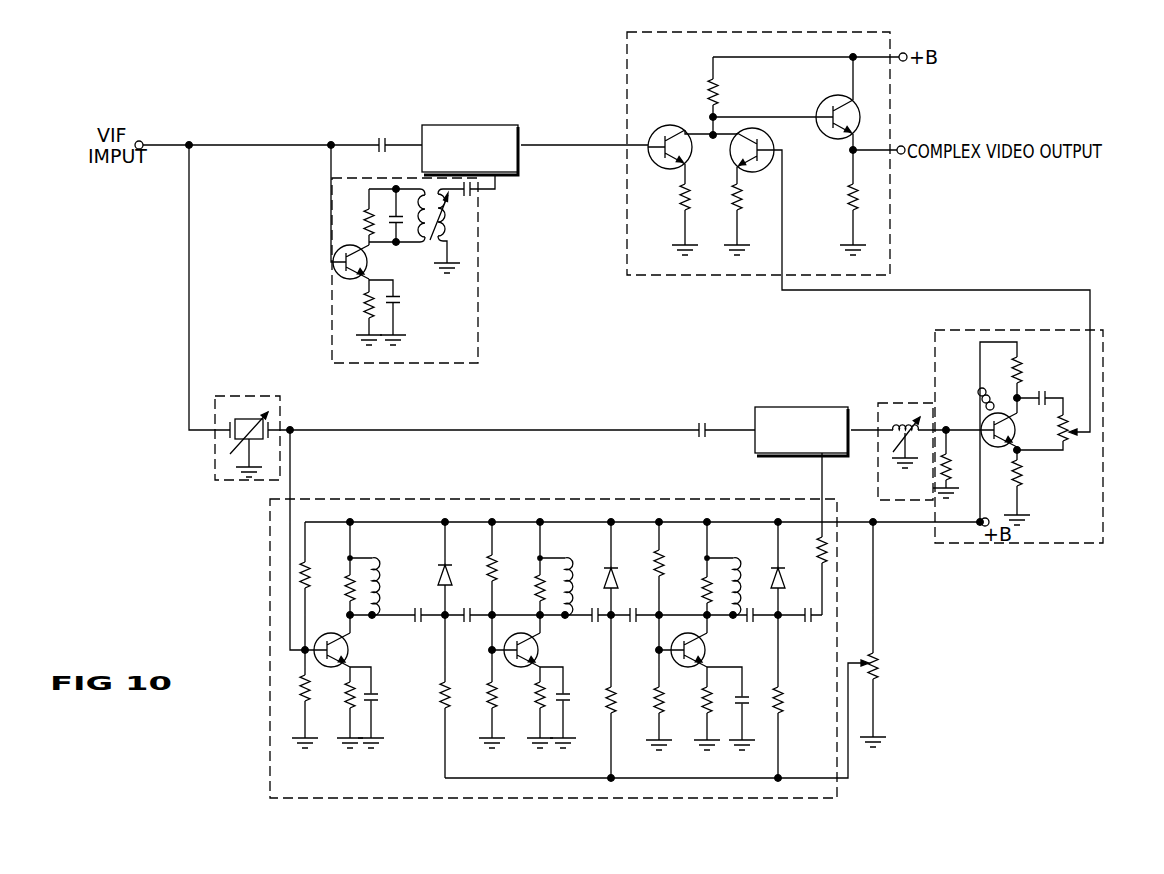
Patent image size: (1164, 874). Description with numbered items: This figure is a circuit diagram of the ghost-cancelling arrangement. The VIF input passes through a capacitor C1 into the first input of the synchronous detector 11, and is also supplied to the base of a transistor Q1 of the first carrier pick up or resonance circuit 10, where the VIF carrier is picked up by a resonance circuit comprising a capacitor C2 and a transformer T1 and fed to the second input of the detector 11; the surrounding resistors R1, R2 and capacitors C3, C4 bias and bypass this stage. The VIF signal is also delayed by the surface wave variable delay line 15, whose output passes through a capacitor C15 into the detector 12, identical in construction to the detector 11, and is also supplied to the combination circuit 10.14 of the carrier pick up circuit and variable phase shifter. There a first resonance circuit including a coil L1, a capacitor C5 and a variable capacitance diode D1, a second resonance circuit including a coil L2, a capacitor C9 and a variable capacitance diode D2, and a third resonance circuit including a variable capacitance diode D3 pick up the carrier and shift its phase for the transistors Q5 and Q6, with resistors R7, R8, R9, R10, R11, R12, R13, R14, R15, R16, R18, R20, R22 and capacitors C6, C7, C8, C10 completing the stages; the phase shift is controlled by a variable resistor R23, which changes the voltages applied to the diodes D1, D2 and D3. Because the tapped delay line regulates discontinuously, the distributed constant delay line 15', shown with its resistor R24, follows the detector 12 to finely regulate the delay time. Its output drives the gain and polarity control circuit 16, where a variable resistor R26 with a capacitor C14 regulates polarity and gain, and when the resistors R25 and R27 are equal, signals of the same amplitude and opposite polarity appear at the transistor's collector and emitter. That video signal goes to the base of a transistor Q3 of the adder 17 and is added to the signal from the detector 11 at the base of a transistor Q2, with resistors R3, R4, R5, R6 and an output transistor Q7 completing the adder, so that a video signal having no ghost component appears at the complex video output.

The first carrier pick up or resonance circuit 10 is at (478, 357).
The synchronous detector 11 is at (492, 125).
The detector 12 is at (799, 407).
The variable delay line 15 is at (247, 426).
The distributed constant delay line 15' is at (905, 439).
The gain and polarity control circuit 16 is at (1103, 449).
The adder 17 is at (715, 32).
The combination circuit of carrier pick up circuit and variable phase shifter 10.14 is at (780, 799).
The capacitor C1 is at (373, 135).
The capacitor C2 is at (389, 206).
The capacitor C3 is at (406, 312).
The capacitor C4 is at (468, 204).
The capacitor C5 is at (415, 628).
The capacitor C6 is at (384, 691).
The capacitor C7 is at (464, 628).
The capacitor C8 is at (571, 685).
The capacitor C9 is at (591, 628).
The capacitor C10 is at (634, 628).
The capacitor C14 is at (1039, 411).
The capacitor C15 is at (711, 419).
The resistor R1 is at (358, 208).
The resistor R2 is at (358, 310).
The resistor R3 is at (702, 92).
The resistor R4 is at (674, 198).
The resistor R5 is at (747, 198).
The resistor R6 is at (842, 202).
The resistor R7 is at (316, 571).
The resistor R8 is at (295, 691).
The resistor R9 is at (340, 594).
The resistor R10 is at (338, 706).
The resistor R11 is at (508, 563).
The resistor R12 is at (481, 708).
The resistor R13 is at (434, 708).
The resistor R14 is at (529, 708).
The resistor R15 is at (526, 590).
The resistor R16 is at (625, 713).
The resistor R18 is at (672, 713).
The resistor R20 is at (718, 713).
The resistor R22 is at (792, 714).
The variable resistor R23 is at (890, 663).
The resistor R24 is at (961, 469).
The resistor R25 is at (1034, 371).
The variable resistor R26 is at (1078, 440).
The resistor R27 is at (1034, 473).
The transistor Q1 is at (365, 262).
The transistor Q2 is at (661, 147).
The transistor Q3 is at (762, 147).
The transistor Q5 is at (534, 650).
The transistor Q6 is at (701, 650).
The transistor Q7 is at (598, 381).
The variable capacitance diode D1 is at (438, 578).
The variable capacitance diode D2 is at (622, 586).
The variable capacitance diode D3 is at (789, 586).
The coil L1 is at (384, 583).
The coil L2 is at (568, 578).
The transformer T1 is at (433, 229).